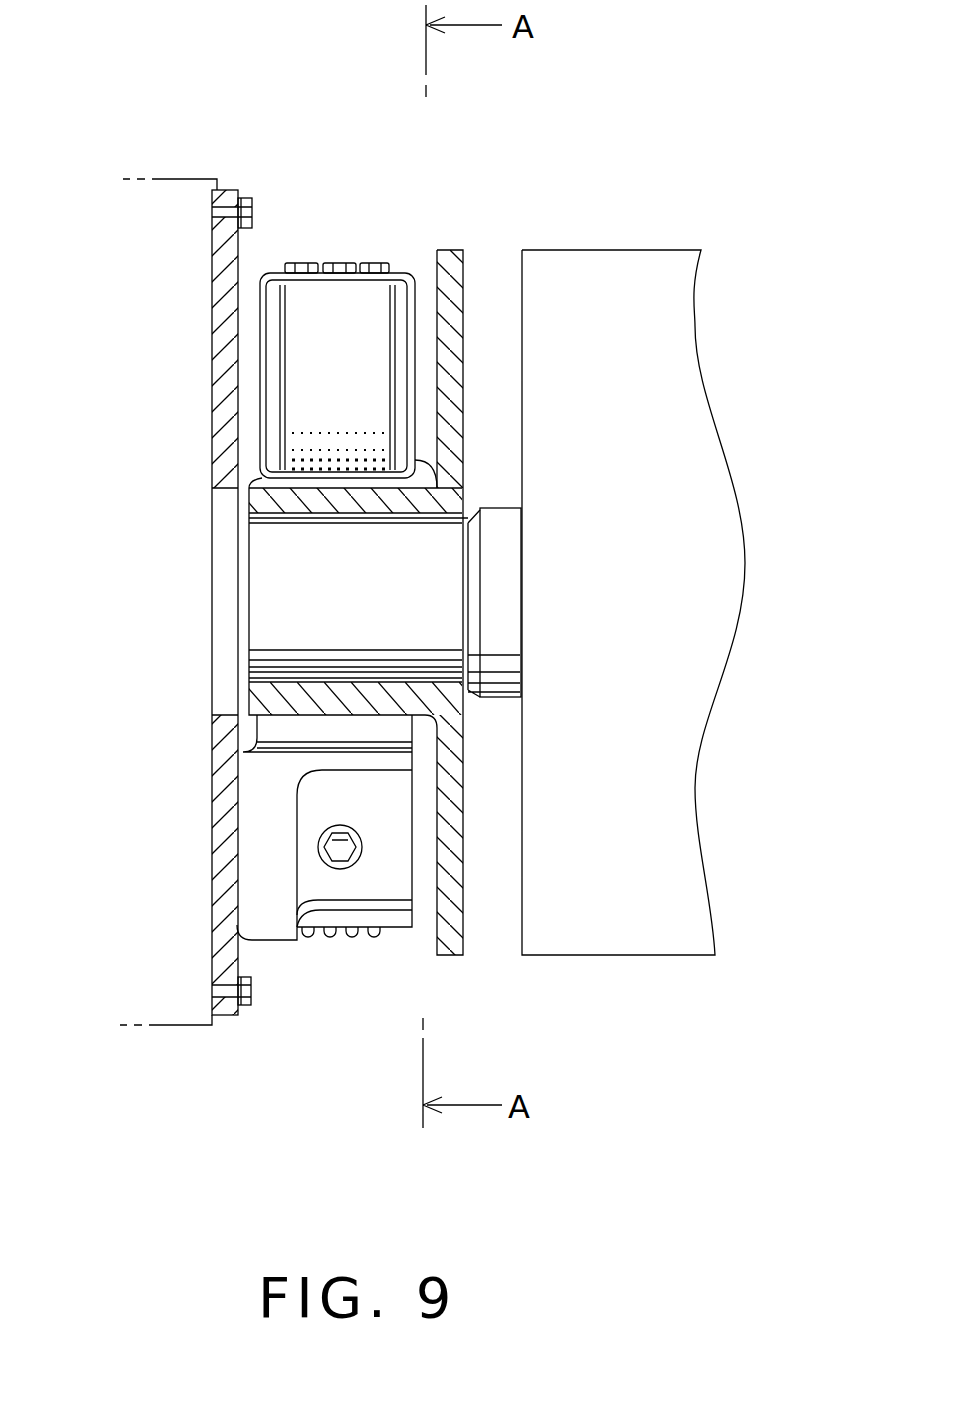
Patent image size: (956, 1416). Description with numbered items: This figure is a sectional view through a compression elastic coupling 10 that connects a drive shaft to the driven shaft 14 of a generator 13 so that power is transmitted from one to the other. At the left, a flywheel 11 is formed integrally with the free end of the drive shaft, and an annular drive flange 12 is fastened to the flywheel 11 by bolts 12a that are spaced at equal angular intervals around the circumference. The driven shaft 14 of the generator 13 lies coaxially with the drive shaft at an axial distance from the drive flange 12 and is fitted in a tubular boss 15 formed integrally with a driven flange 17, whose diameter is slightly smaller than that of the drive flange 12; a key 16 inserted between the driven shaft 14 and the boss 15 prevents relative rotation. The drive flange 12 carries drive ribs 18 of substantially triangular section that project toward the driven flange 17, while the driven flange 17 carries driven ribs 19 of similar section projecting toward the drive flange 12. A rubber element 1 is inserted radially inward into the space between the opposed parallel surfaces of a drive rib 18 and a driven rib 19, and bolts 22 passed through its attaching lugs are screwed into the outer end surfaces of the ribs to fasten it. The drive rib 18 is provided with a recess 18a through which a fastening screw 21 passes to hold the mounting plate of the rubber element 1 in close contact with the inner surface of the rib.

The rubber element 1 is at (278, 359).
The compression elastic coupling 10 is at (355, 114).
The flywheel 11 is at (180, 187).
The drive flange 12 is at (217, 258).
The bolts 12a is at (252, 200).
The generator 13 is at (700, 482).
The driven shaft 14 is at (285, 628).
The tubular boss 15 is at (260, 498).
The key 16 is at (307, 517).
The driven flange 17 is at (465, 270).
The drive rib 18 is at (262, 890).
The recess 18a is at (398, 885).
The driven rib 19 is at (427, 295).
The fastening screw 21 is at (315, 848).
The bolts 22 is at (340, 262).